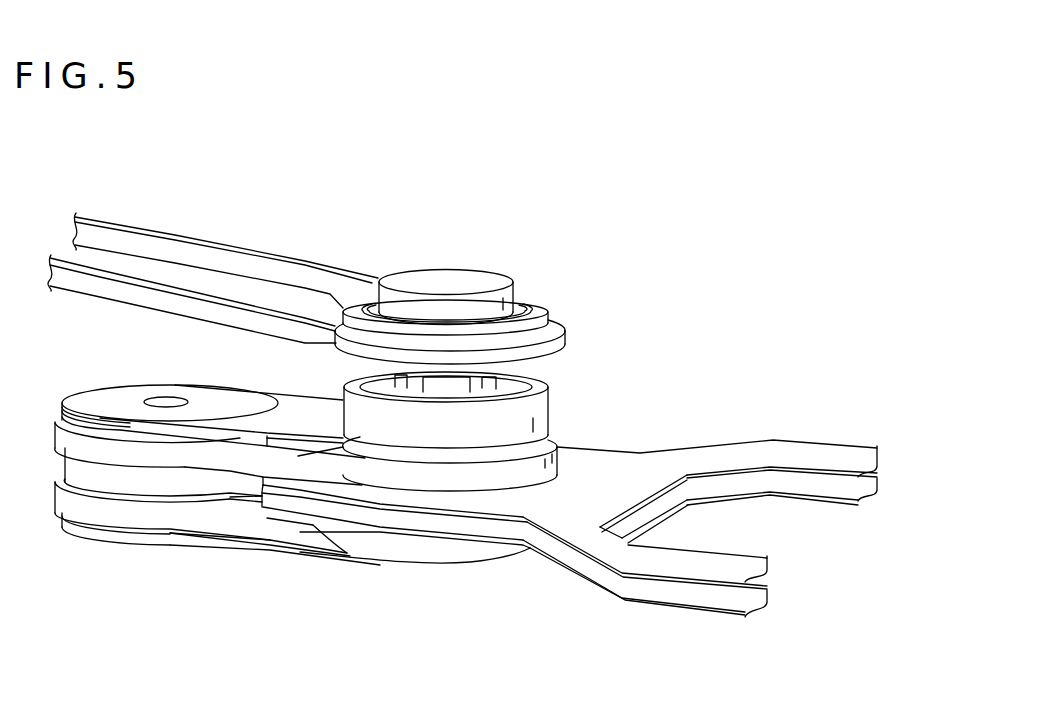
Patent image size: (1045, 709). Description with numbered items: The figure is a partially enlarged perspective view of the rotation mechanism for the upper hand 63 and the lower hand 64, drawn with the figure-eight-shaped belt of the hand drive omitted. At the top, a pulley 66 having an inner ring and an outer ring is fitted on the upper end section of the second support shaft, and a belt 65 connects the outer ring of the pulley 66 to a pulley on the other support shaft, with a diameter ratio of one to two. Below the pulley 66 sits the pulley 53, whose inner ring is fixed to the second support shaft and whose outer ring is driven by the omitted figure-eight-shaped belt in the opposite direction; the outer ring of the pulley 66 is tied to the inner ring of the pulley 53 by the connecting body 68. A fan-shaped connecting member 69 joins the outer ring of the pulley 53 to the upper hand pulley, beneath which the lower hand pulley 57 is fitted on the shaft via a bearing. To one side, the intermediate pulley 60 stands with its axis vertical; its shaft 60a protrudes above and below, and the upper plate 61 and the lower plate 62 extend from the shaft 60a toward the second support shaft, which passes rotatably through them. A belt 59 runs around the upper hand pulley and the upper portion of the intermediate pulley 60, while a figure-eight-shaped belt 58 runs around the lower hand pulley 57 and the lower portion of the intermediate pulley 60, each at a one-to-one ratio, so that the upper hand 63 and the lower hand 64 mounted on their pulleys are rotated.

The pulley 53 is at (344, 379).
The lower hand pulley 57 is at (437, 568).
The 8-shaped belt 58 is at (186, 520).
The belt 59 is at (563, 456).
The intermediate pulley 60 is at (67, 468).
The shaft 60a is at (167, 400).
The upper plate 61 is at (106, 397).
The lower plate 62 is at (105, 540).
The upper hand 63 is at (750, 450).
The lower hand 64 is at (662, 598).
The belt 65 is at (158, 245).
The pulley 66 is at (356, 295).
The connecting body 68 is at (545, 374).
The connecting member 69 is at (490, 455).